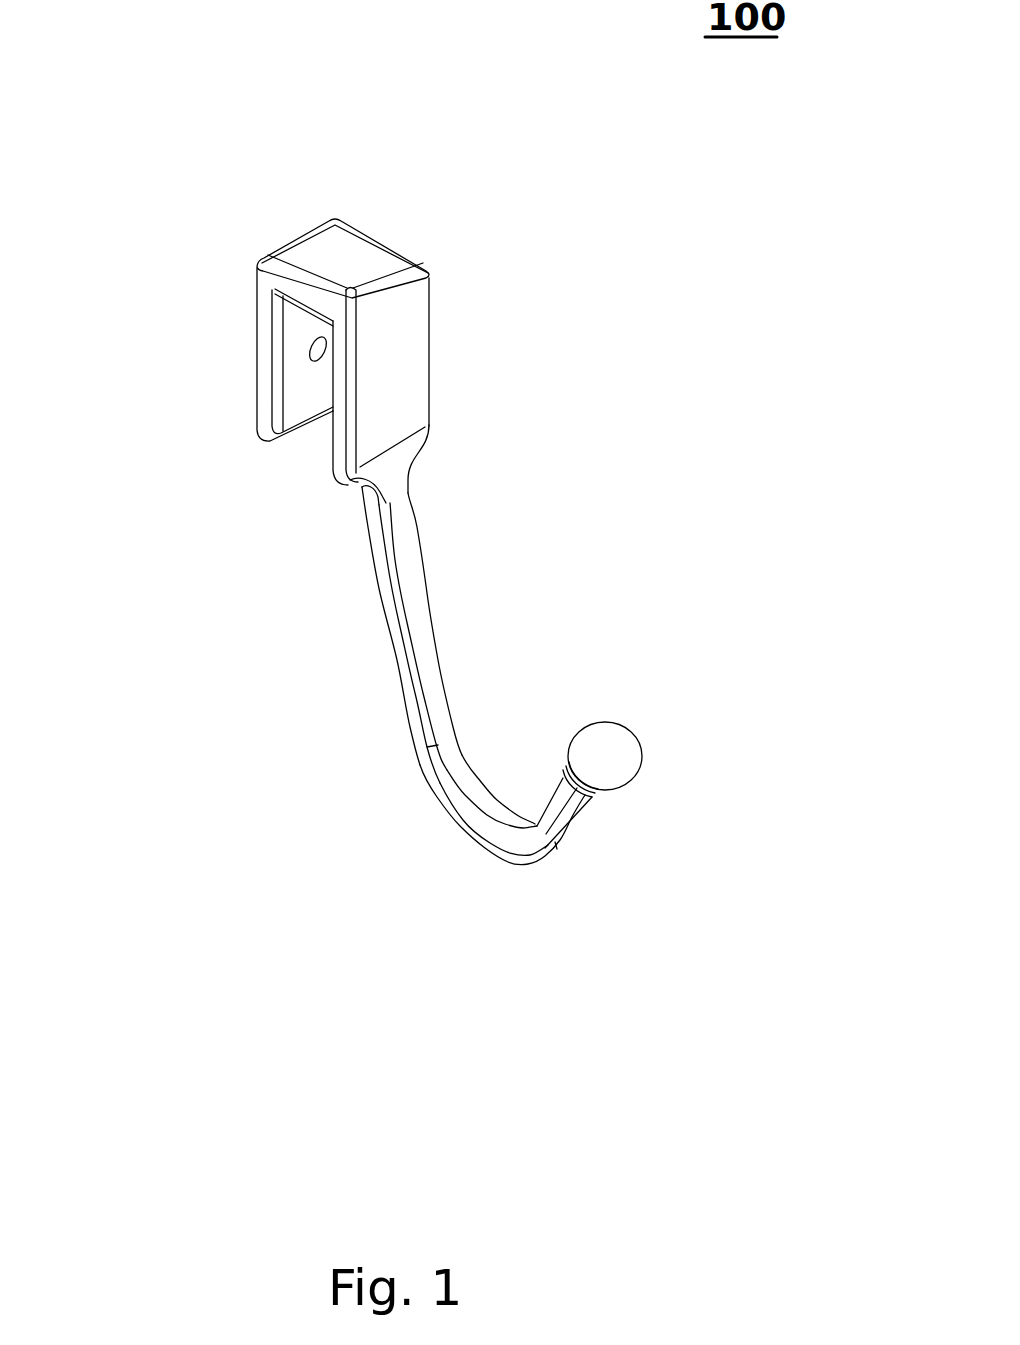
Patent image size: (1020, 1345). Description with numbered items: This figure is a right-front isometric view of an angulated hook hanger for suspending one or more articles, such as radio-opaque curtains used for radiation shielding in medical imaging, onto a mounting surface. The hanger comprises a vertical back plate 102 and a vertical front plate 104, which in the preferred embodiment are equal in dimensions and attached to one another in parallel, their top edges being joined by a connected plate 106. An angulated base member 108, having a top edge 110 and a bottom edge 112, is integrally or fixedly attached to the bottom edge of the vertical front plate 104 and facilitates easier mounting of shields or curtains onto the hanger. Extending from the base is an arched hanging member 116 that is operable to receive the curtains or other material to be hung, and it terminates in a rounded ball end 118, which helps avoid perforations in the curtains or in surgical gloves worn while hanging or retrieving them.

The vertical back plate 102 is at (258, 297).
The vertical front plate 104 is at (432, 377).
The connected plate 106 is at (393, 247).
The angulated base member 108 is at (435, 603).
The top edge 110 is at (410, 487).
The bottom edge 112 is at (430, 747).
The arched hanging member 116 is at (427, 787).
The rounded ball end 118 is at (637, 740).